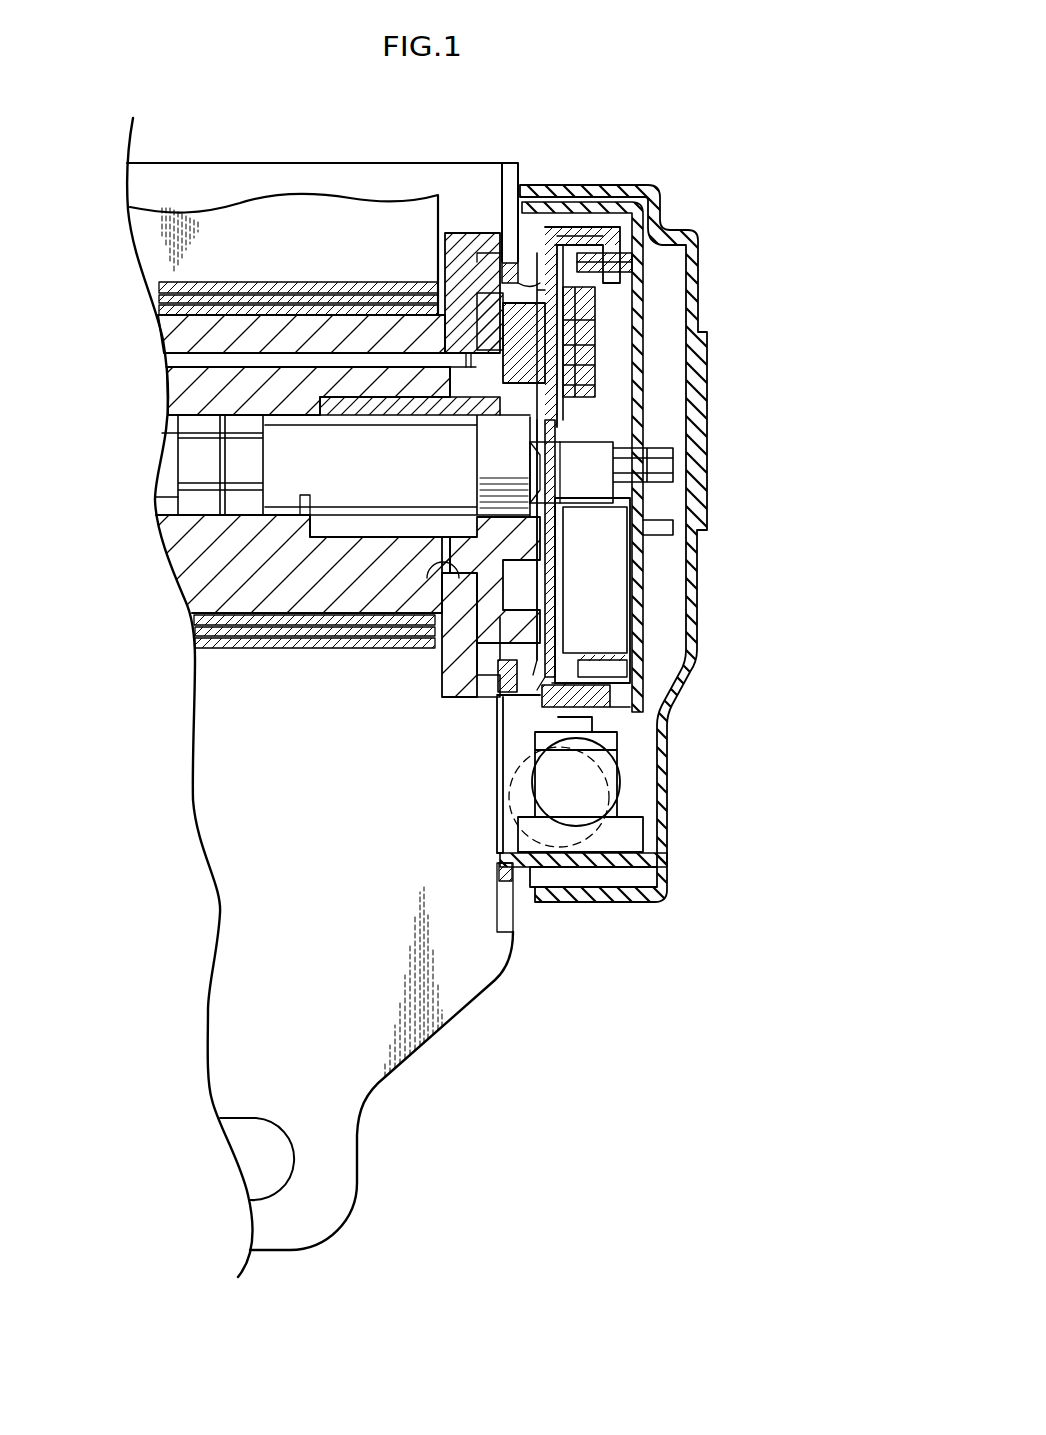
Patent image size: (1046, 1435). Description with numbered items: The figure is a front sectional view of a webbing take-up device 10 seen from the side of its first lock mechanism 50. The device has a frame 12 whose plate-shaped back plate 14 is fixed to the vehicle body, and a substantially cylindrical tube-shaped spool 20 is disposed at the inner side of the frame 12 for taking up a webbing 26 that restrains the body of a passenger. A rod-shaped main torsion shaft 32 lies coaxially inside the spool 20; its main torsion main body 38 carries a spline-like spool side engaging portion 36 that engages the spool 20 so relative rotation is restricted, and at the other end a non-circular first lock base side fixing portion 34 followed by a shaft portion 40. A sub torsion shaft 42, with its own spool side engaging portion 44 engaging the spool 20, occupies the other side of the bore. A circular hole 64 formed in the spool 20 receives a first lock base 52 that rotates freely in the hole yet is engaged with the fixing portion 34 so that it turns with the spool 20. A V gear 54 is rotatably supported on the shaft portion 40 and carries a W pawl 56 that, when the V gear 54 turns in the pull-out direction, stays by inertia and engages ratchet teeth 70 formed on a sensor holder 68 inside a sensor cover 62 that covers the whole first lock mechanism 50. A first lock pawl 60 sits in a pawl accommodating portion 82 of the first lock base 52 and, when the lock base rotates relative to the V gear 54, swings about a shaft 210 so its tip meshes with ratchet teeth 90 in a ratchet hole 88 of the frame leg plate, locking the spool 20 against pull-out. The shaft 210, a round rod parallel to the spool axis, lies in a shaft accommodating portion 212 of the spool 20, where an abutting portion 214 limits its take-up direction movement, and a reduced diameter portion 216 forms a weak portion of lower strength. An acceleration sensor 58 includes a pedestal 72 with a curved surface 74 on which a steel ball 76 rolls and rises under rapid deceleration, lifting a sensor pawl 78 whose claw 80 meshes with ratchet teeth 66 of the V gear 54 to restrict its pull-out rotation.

The webbing take-up device 10 is at (501, 117).
The frame 12 is at (366, 1153).
The back plate 14 is at (460, 1002).
The spool 20 is at (233, 588).
The webbing 26 is at (218, 173).
The main torsion shaft 32 is at (342, 495).
The first lock base side fixing portion 34 is at (490, 464).
The spool side engaging portion 36 is at (307, 494).
The main torsion main body 38 is at (340, 482).
The shaft portion 40 is at (617, 465).
The sub torsion shaft 42 is at (170, 478).
The spool side engaging portion 44 is at (198, 508).
The first lock mechanism 50 is at (706, 228).
The first lock base 52 is at (487, 672).
The V gear 54 is at (545, 570).
The W pawl 56 is at (600, 348).
The acceleration sensor 58 is at (640, 785).
The first lock pawl 60 is at (505, 330).
The sensor cover 62 is at (710, 398).
The circular hole 64 is at (452, 625).
The ratchet teeth 66 is at (570, 225).
The sensor holder 68 is at (638, 634).
The ratchet teeth 70 is at (604, 300).
The pedestal 72 is at (616, 835).
The curved surface 74 is at (510, 834).
The steel ball 76 is at (627, 788).
The sensor pawl 78 is at (607, 742).
The claw 80 is at (560, 712).
The pawl accommodating portion 82 is at (598, 378).
The ratchet hole 88 is at (620, 335).
The ratchet teeth 90 is at (498, 290).
The shaft 210 is at (202, 358).
The shaft accommodating portion 212 is at (246, 343).
The abutting portion 214 is at (318, 350).
The reduced diameter portion 216 is at (472, 350).